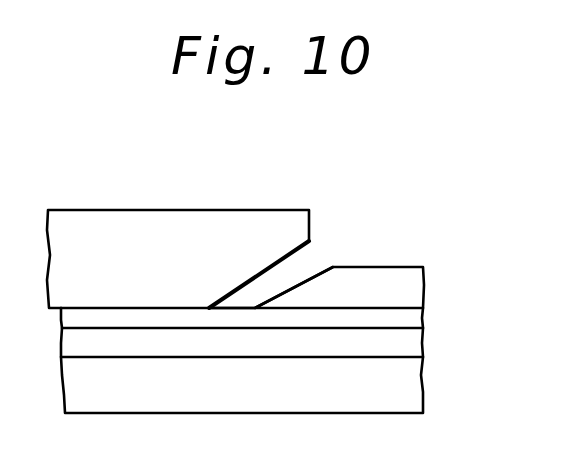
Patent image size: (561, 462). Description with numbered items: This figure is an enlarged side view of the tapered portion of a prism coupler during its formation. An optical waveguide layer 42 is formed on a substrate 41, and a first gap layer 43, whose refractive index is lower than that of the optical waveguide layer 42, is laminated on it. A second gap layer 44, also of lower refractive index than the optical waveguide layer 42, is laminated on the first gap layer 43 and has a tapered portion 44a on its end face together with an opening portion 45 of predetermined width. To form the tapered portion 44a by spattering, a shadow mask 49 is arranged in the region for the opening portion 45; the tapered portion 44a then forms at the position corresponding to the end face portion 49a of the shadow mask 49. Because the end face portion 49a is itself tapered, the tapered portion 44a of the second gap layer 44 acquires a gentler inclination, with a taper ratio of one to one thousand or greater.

The substrate 41 is at (406, 387).
The optical waveguide layer 42 is at (408, 347).
The first gap layer 43 is at (412, 320).
The second gap layer 44 is at (397, 283).
The tapered portion 44a is at (305, 280).
The opening portion 45 is at (258, 288).
The shadow mask 49 is at (162, 225).
The end face portion 49a is at (298, 250).